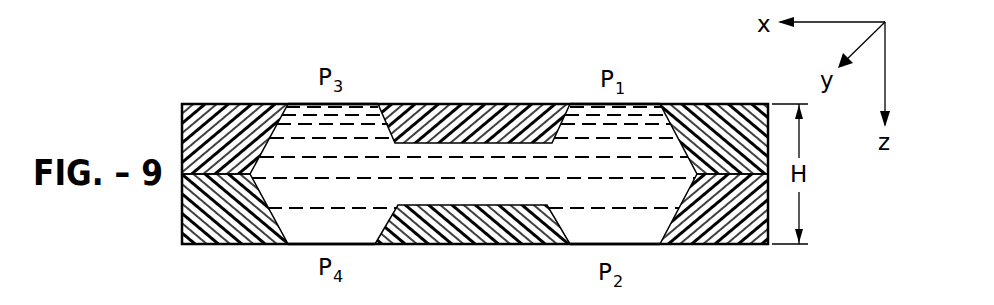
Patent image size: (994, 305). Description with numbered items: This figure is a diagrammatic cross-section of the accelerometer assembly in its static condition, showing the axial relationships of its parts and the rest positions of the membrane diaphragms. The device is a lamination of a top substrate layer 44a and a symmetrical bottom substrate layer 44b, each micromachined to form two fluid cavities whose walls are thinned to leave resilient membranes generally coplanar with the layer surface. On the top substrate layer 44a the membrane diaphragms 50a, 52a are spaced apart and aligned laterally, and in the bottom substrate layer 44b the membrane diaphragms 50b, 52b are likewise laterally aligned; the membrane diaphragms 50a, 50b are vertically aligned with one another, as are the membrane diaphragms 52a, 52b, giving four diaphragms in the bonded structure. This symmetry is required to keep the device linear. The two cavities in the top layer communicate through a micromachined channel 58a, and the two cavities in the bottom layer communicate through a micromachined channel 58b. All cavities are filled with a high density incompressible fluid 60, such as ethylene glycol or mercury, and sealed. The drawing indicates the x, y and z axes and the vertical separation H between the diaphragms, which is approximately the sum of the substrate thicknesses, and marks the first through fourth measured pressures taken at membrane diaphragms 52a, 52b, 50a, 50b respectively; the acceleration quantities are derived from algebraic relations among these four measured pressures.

The top substrate layer 44a is at (182, 143).
The bottom substrate layer 44b is at (182, 217).
The membrane diaphragm 50a is at (307, 104).
The membrane diaphragm 50b is at (305, 244).
The membrane diaphragm 52a is at (637, 104).
The membrane diaphragm 52b is at (640, 244).
The micromachined channel 58a is at (450, 150).
The micromachined channel 58b is at (450, 190).
The incompressible fluid 60 is at (604, 134).